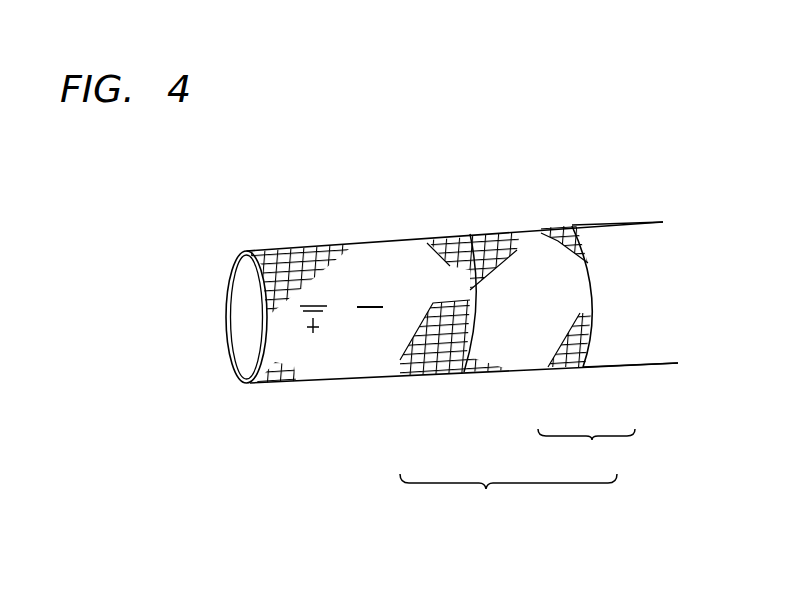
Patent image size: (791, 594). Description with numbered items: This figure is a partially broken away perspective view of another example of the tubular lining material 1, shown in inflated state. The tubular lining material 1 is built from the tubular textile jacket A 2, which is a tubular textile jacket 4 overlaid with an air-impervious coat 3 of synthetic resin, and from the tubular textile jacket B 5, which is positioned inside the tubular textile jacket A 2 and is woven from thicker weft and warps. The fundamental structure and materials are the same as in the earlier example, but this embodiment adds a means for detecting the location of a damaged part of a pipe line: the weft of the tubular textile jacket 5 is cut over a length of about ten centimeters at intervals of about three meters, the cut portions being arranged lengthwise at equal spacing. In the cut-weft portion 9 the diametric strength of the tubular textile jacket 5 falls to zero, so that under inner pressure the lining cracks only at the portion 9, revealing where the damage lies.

The tubular lining material 1 is at (508, 498).
The tubular textile jacket A 2 is at (586, 448).
The air-impervious coat 3 is at (633, 354).
The tubular textile jacket 4 is at (548, 354).
The tubular textile jacket B 5 is at (396, 374).
The cut-weft portion 9 is at (377, 305).